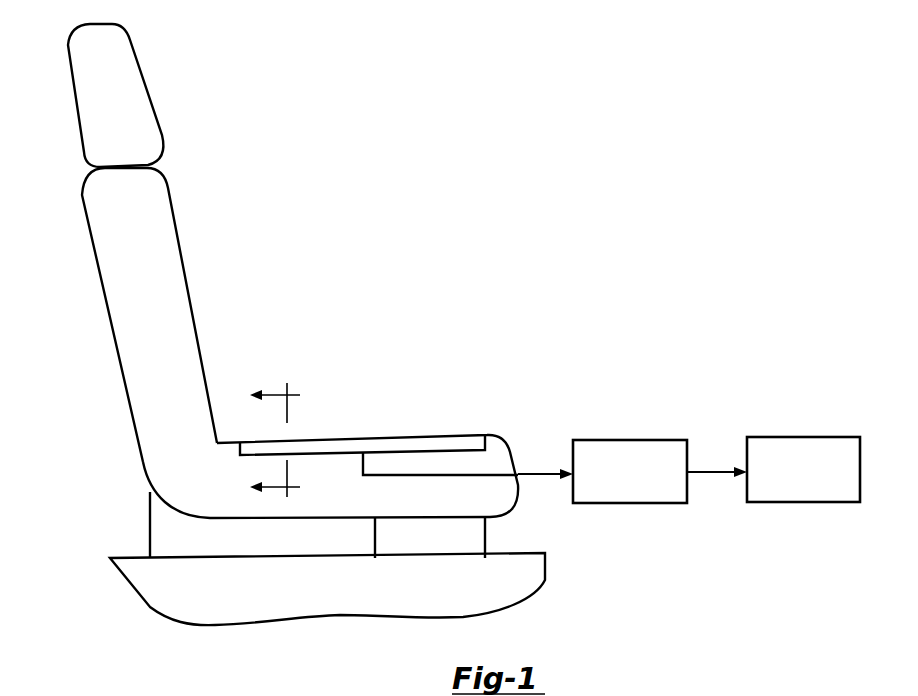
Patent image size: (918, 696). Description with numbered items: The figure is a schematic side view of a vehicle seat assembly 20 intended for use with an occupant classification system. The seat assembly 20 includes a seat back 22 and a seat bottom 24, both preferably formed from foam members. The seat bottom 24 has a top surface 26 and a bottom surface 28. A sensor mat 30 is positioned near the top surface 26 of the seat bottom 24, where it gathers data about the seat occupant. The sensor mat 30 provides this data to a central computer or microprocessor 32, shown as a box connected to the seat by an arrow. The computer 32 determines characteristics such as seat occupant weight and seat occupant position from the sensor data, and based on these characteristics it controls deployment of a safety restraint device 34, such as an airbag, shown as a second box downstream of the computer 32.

The vehicle seat assembly 20 is at (257, 323).
The seat back 22 is at (115, 343).
The seat bottom 24 is at (187, 500).
The top surface 26 is at (497, 433).
The bottom surface 28 is at (375, 558).
The sensor mat 30 is at (347, 447).
The central computer or microprocessor 32 is at (640, 484).
The safety restraint device 34 is at (813, 483).